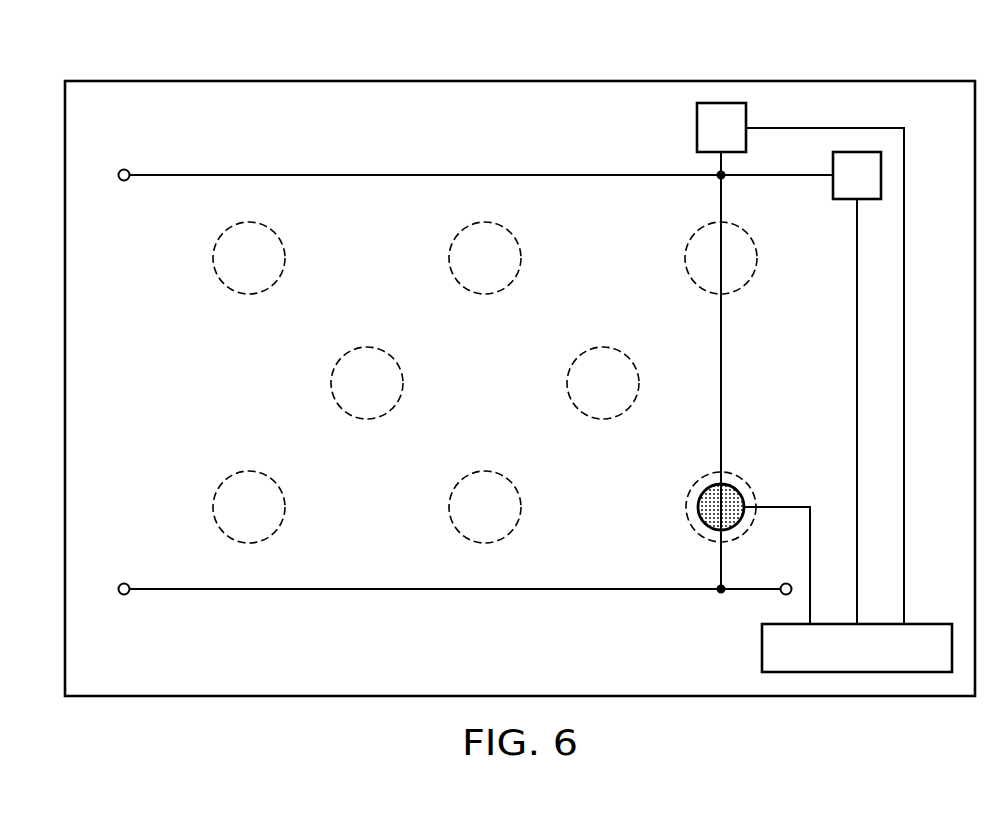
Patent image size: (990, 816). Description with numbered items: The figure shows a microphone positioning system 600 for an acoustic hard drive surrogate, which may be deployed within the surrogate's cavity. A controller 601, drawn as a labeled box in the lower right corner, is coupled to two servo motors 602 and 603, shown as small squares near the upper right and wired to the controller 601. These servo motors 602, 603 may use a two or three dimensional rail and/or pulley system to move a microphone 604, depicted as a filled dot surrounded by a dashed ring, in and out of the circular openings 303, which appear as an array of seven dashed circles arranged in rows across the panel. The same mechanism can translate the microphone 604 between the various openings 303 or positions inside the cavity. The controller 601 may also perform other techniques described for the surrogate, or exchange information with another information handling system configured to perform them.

The microphone positioning system 600 is at (377, 81).
The controller 601 is at (762, 650).
The servo motor 602 is at (697, 116).
The servo motor 603 is at (843, 200).
The microphone 604 is at (703, 527).
The circular openings 303 is at (215, 250).